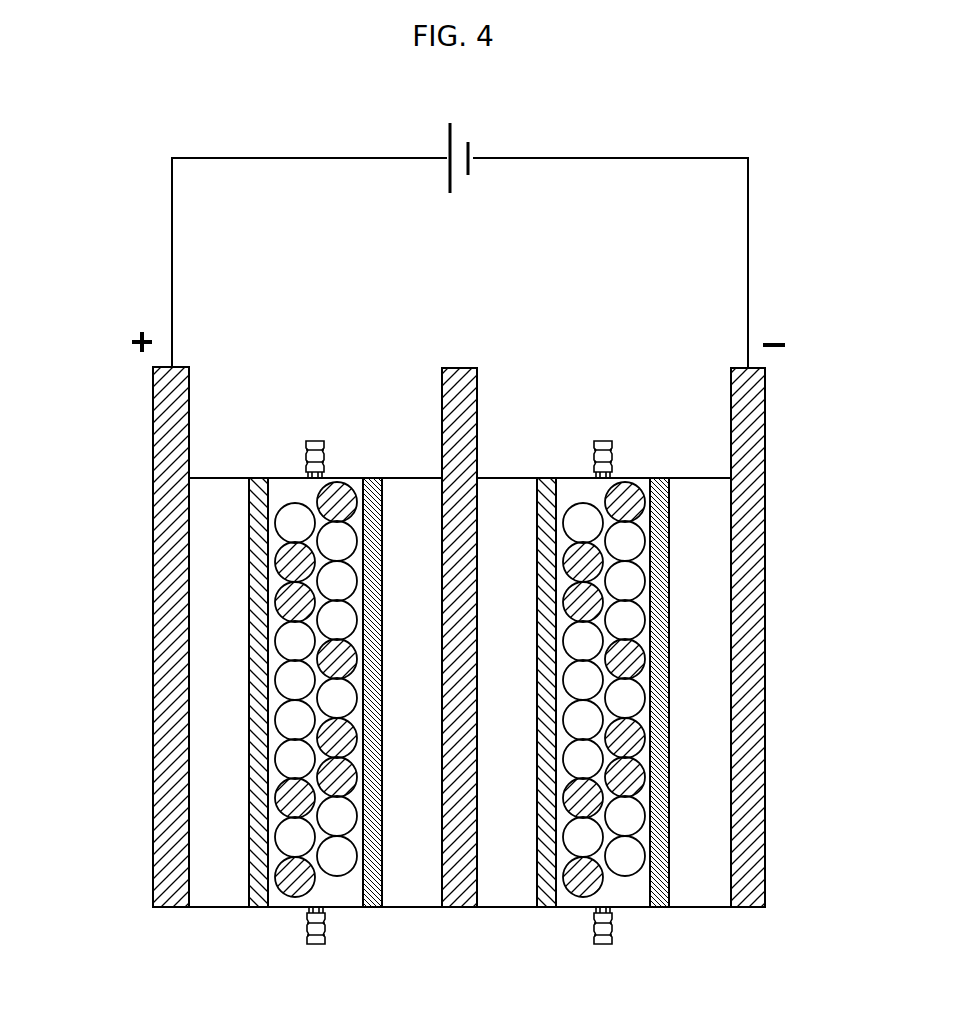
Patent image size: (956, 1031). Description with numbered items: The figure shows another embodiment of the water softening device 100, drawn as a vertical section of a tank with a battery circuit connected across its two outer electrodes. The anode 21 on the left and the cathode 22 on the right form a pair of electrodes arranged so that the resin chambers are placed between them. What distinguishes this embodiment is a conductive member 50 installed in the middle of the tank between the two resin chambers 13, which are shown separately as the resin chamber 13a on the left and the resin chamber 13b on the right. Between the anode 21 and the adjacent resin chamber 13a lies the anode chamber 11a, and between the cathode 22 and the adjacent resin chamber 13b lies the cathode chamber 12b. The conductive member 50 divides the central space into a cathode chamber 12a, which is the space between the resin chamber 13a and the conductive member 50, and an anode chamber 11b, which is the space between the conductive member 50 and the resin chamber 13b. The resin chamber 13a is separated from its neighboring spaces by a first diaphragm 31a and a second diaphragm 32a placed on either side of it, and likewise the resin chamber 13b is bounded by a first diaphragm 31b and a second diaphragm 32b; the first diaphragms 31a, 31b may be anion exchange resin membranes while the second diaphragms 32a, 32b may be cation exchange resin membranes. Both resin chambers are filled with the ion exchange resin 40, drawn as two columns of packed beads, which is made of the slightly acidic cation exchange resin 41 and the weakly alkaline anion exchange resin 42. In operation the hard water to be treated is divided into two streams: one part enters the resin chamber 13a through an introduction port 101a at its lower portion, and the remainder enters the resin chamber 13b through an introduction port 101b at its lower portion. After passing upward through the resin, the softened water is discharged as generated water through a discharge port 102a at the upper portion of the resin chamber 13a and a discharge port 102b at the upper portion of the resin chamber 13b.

The water softening device 100 is at (134, 143).
The anode 21 is at (153, 392).
The cathode 22 is at (765, 393).
The conductive member 50 is at (457, 368).
The anode chamber 11a is at (217, 478).
The anode chamber 11b is at (510, 478).
The cathode chamber 12a is at (408, 478).
The cathode chamber 12b is at (700, 478).
The resin chamber 13 is at (523, 266).
The resin chamber 13a is at (343, 622).
The resin chamber 13b is at (579, 478).
The first diaphragm 31a is at (258, 478).
The first diaphragm 31b is at (547, 478).
The second diaphragm 32a is at (372, 478).
The second diaphragm 32b is at (660, 478).
The ion exchange resin 40 is at (327, 733).
The slightly acidic cation exchange resin 41 is at (295, 896).
The weakly alkaline anion exchange resin 42 is at (333, 876).
The introduction port 101a is at (315, 945).
The introduction port 101b is at (603, 945).
The discharge port 102a is at (314, 440).
The discharge port 102b is at (603, 440).